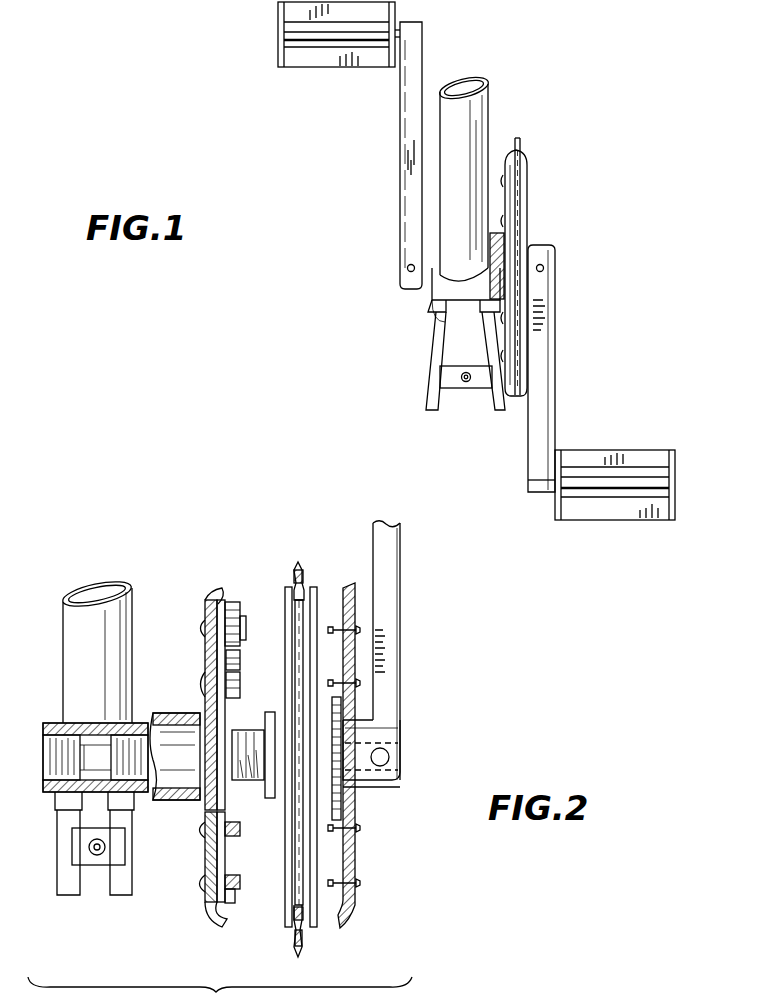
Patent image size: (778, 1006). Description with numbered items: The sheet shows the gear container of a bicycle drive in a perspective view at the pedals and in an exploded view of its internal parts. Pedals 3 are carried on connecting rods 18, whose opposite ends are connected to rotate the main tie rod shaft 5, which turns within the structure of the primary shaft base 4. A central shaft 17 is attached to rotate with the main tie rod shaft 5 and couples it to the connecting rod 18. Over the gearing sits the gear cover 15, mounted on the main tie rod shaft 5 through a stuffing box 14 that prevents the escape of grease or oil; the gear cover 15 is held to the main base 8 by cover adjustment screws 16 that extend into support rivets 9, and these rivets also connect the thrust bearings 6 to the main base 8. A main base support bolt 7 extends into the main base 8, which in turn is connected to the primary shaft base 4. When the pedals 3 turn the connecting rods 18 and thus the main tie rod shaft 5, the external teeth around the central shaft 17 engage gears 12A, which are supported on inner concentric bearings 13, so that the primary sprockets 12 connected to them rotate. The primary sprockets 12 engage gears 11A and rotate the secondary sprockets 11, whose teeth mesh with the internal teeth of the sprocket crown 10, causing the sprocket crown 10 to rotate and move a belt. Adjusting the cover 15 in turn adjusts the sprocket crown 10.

In FIG. 1, the pedals 3 is at (316, 62).
In FIG. 1, the primary shaft base 4 is at (478, 130).
In FIG. 2, the primary shaft base 4 is at (62, 708).
In FIG. 1, the main tie rod shaft 5 is at (432, 292).
In FIG. 2, the main tie rod shaft 5 is at (403, 763).
In FIG. 2, the thrust bearings 6 is at (286, 587).
In FIG. 2, the main base support bolt 7 is at (268, 788).
In FIG. 2, the main base 8 is at (172, 715).
In FIG. 2, the support rivets 9 is at (202, 685).
In FIG. 1, the sprocket crown 10 is at (518, 140).
In FIG. 2, the sprocket crown 10 is at (300, 560).
In FIG. 2, the secondary sprockets 11 is at (240, 608).
In FIG. 2, the gears 11A is at (208, 604).
In FIG. 2, the primary sprockets 12 is at (228, 715).
In FIG. 2, the gears 12A is at (240, 680).
In FIG. 2, the inner concentric bearings 13 is at (242, 822).
In FIG. 2, the stuffing box 14 is at (352, 793).
In FIG. 1, the gear cover 15 is at (528, 188).
In FIG. 2, the gear cover 15 is at (347, 600).
In FIG. 2, the cover adjustment screws 16 is at (362, 683).
In FIG. 2, the central shaft 17 is at (336, 738).
In FIG. 1, the connecting rods 18 is at (403, 188).
In FIG. 2, the connecting rods 18 is at (383, 588).